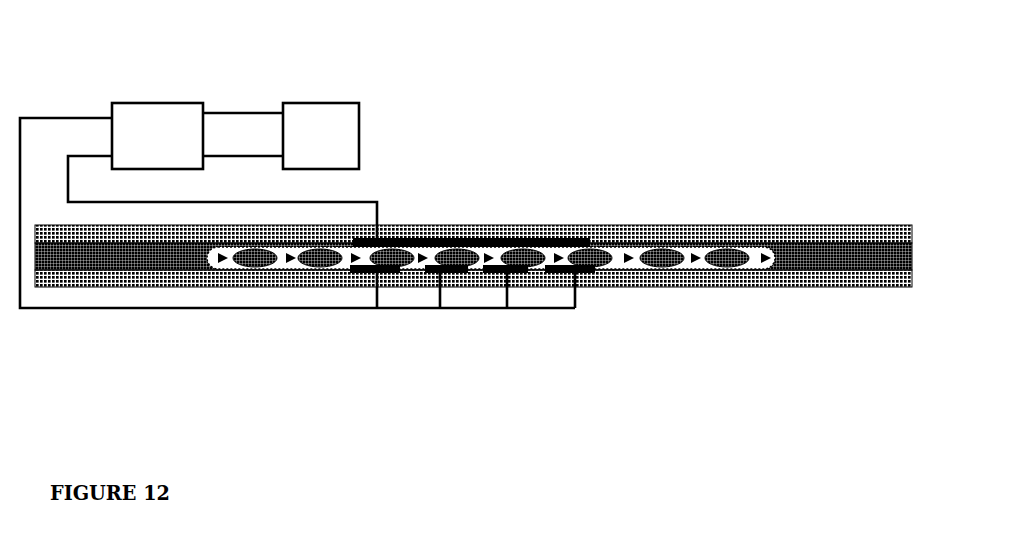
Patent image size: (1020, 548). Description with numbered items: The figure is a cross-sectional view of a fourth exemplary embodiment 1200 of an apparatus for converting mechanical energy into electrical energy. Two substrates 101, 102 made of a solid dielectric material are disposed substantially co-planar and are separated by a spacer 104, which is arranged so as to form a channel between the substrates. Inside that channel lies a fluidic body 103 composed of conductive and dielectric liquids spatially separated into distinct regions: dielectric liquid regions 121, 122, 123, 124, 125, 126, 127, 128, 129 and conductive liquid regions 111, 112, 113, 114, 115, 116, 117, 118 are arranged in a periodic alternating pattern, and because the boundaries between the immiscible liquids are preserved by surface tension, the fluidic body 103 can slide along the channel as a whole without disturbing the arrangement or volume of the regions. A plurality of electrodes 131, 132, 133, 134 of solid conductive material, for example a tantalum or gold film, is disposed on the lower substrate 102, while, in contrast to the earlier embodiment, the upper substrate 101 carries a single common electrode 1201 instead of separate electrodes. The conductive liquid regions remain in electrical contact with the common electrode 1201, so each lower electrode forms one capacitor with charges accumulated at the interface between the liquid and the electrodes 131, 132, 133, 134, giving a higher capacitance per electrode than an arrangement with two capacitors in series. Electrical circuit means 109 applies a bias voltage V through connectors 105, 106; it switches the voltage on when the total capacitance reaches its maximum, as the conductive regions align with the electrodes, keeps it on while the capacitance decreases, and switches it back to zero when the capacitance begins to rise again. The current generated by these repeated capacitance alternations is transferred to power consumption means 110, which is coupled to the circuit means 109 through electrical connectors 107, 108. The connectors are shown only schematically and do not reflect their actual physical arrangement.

The apparatus 1200 is at (832, 52).
The common electrode 1201 is at (458, 237).
The substrate 101 is at (461, 258).
The substrate 102 is at (74, 300).
The fluidic body 103 is at (210, 256).
The spacer 104 is at (814, 250).
The connector 105 is at (362, 190).
The connector 106 is at (52, 101).
The electrical connector 107 is at (237, 101).
The electrical connector 108 is at (237, 138).
The electrical circuit means 109 is at (190, 91).
The power consumption means 110 is at (374, 88).
The conductive liquid region 111 is at (255, 265).
The conductive liquid region 112 is at (322, 265).
The conductive liquid region 113 is at (404, 265).
The conductive liquid region 114 is at (465, 265).
The conductive liquid region 115 is at (531, 265).
The conductive liquid region 116 is at (594, 265).
The conductive liquid region 117 is at (666, 265).
The conductive liquid region 118 is at (727, 265).
The dielectric liquid region 121 is at (227, 266).
The dielectric liquid region 122 is at (295, 266).
The dielectric liquid region 123 is at (360, 266).
The dielectric liquid region 124 is at (427, 266).
The dielectric liquid region 125 is at (493, 266).
The dielectric liquid region 126 is at (563, 266).
The dielectric liquid region 127 is at (633, 266).
The dielectric liquid region 128 is at (700, 266).
The dielectric liquid region 129 is at (770, 266).
The electrode 131 is at (395, 274).
The electrode 132 is at (455, 274).
The electrode 133 is at (527, 274).
The electrode 134 is at (590, 274).